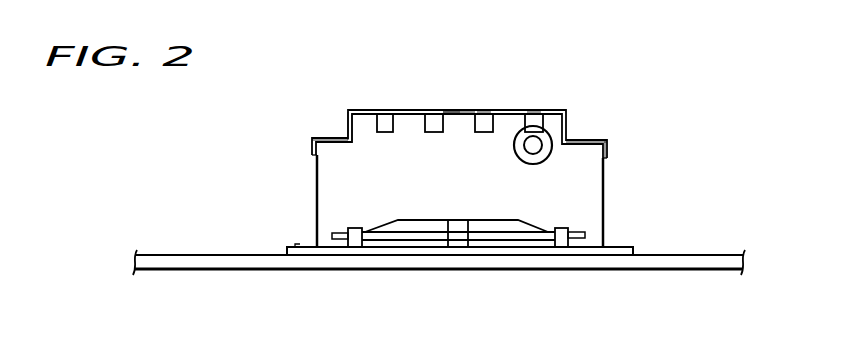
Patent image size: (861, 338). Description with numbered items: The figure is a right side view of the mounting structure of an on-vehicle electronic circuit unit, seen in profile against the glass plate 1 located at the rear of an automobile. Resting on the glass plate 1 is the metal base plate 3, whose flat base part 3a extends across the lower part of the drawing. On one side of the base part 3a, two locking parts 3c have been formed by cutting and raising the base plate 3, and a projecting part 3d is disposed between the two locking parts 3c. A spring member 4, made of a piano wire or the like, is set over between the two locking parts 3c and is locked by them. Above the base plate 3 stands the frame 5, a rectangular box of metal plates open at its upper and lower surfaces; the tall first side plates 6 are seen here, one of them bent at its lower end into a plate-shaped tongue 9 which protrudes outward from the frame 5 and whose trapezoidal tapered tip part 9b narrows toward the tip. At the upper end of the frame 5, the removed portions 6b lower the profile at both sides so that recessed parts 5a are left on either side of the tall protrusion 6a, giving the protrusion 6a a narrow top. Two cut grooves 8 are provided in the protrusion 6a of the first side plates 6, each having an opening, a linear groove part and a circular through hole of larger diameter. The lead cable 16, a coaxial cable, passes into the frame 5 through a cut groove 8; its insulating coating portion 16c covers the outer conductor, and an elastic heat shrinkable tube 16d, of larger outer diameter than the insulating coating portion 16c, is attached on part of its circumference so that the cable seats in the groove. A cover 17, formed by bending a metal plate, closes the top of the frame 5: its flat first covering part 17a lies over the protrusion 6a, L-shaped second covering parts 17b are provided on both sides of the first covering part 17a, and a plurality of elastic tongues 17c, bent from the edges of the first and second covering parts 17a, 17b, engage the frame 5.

The glass plate 1 is at (203, 262).
The base plate 3 is at (642, 240).
The base part 3a is at (290, 246).
The locking parts 3c is at (347, 226).
The projecting part 3d is at (455, 220).
The spring member 4 is at (578, 240).
The frame 5 is at (305, 173).
The recessed parts 5a is at (330, 120).
The first side plates 6 is at (405, 140).
The protrusion 6a is at (467, 110).
The removed portions 6b is at (337, 145).
The cut grooves 8 is at (533, 110).
The tongue 9 is at (385, 246).
The tapered tip part 9b is at (420, 235).
The lead cable 16 is at (556, 118).
The insulating coating portion 16c is at (533, 152).
The heat shrinkable tube 16d is at (514, 147).
The cover 17 is at (381, 100).
The first covering part 17a is at (455, 108).
The second covering part 17b is at (315, 137).
The elastic tongues 17c is at (608, 145).